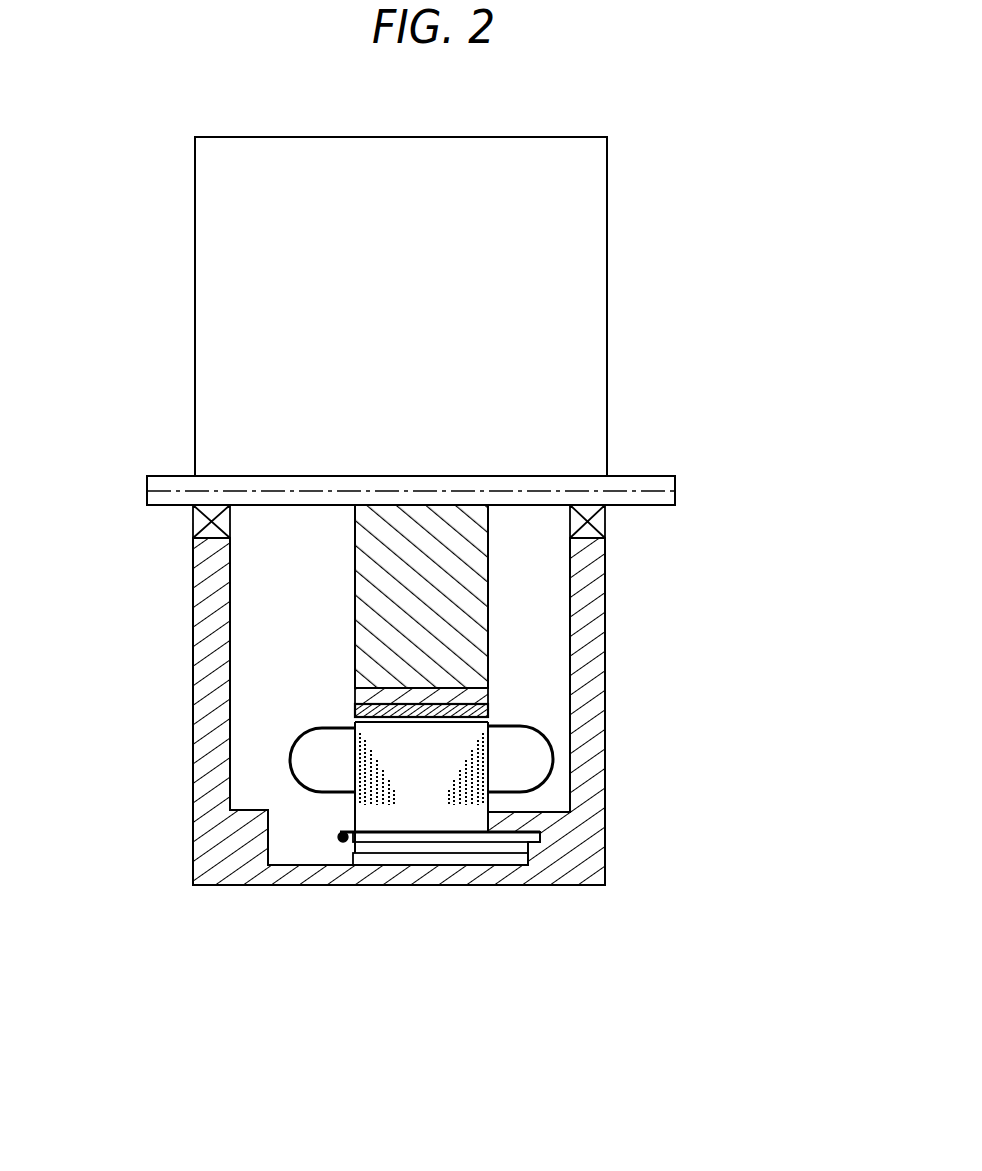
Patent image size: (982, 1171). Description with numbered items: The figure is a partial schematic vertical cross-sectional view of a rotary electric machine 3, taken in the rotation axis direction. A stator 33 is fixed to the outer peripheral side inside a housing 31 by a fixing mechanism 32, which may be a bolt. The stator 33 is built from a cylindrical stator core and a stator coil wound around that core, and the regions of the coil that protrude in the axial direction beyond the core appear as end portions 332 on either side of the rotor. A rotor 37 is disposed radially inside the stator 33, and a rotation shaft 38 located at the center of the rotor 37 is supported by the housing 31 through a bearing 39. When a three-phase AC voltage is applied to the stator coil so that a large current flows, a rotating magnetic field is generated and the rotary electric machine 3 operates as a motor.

The rotary electric machine 3 is at (704, 162).
The housing 31 is at (590, 265).
The fixing mechanism 32 is at (345, 840).
The stator 33 is at (427, 808).
The end portion 332 is at (347, 713).
The rotor 37 is at (388, 568).
The rotation shaft 38 is at (630, 487).
The bearing 39 is at (607, 532).